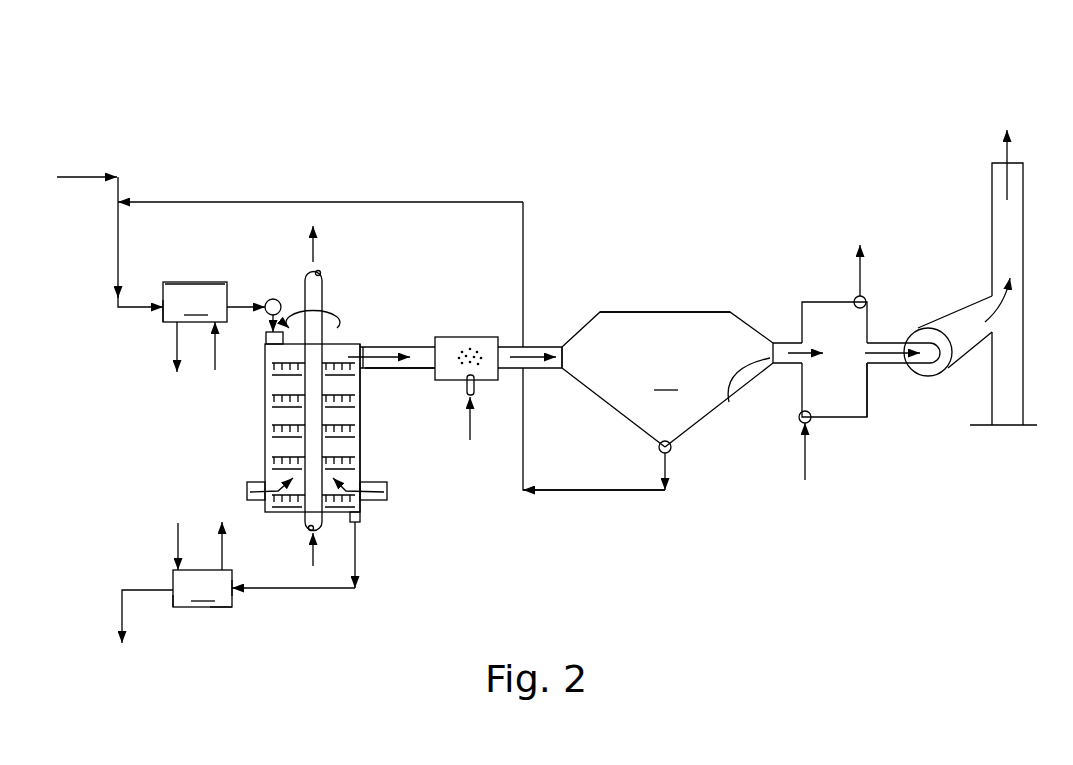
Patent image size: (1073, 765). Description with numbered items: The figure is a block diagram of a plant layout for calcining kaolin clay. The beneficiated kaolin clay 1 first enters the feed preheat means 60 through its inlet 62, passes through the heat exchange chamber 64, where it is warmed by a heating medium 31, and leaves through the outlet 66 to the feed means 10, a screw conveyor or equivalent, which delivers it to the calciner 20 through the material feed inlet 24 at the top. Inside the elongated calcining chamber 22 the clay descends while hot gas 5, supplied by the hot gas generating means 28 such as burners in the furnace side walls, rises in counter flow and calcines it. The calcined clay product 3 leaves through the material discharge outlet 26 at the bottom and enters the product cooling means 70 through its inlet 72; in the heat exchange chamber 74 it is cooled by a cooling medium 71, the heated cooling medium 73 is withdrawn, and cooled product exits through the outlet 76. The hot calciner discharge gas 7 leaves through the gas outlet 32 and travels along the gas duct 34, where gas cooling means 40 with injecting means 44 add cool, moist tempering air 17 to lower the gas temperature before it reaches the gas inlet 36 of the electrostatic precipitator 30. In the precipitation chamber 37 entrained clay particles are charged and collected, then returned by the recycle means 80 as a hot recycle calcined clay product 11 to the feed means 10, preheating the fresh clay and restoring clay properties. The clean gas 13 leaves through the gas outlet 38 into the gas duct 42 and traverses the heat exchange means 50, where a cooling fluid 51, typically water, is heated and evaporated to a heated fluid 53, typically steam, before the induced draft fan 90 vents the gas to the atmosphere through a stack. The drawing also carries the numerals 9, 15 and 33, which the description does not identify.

The beneficiated kaolin clay 1 is at (83, 176).
The calcined clay product 3 is at (356, 558).
The hot gas 5 is at (375, 500).
The hot calciner discharge gas 7 is at (386, 350).
The conduit 9 is at (542, 348).
The feed means 10 is at (283, 298).
The recycle calcined clay product 11 is at (170, 202).
The clean gas 13 is at (790, 364).
The exhaust gas line 15 is at (875, 343).
The tempering air 17 is at (470, 430).
The calciner 20 is at (362, 422).
The calcining chamber 22 is at (265, 417).
The material feed inlet 24 is at (266, 337).
The material discharge outlet 26 is at (362, 518).
The hot gas generating means 28 is at (256, 482).
The electrostatic precipitator 30 is at (672, 312).
The heating medium 31 is at (215, 360).
The gas outlet 32 is at (372, 370).
The outlet stream 33 is at (177, 345).
The gas duct 34 is at (420, 370).
The gas inlet 36 is at (568, 352).
The precipitation chamber 37 is at (667, 379).
The gas outlet 38 is at (735, 398).
The gas cooling means 40 is at (485, 337).
The gas duct 42 is at (870, 370).
The injecting means 44 is at (474, 385).
The heat exchange means 50 is at (823, 302).
The cooling fluid 51 is at (805, 452).
The heated fluid 53 is at (862, 280).
The feed preheat means 60 is at (178, 282).
The inlet 62 is at (163, 310).
The heat exchange chamber 64 is at (195, 302).
The outlet 66 is at (229, 292).
The product cooling means 70 is at (225, 607).
The cooling medium 71 is at (178, 540).
The inlet 72 is at (236, 576).
The heated cooling medium 73 is at (226, 550).
The heat exchange chamber 74 is at (202, 588).
The outlet 76 is at (173, 602).
The recycle means 80 is at (672, 448).
The induced draft fan 90 is at (922, 330).